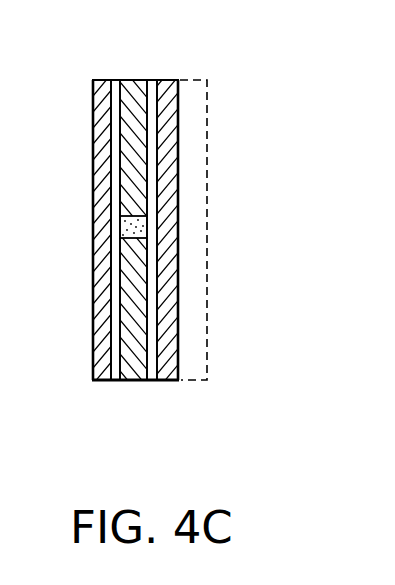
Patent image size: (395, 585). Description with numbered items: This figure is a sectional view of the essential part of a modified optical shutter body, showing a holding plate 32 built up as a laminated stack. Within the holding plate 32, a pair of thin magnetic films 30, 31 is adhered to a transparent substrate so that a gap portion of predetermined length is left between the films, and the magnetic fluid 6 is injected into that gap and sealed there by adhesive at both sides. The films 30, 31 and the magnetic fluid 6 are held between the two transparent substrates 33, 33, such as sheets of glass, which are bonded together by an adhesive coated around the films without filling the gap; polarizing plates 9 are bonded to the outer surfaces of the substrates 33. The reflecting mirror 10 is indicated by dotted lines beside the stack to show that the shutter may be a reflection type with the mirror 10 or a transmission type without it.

The outer plate 9 is at (98, 80).
The holding plate 32 is at (177, 234).
The magnetic films 30 is at (147, 170).
The intermediate layer 31 is at (147, 331).
The magnetic fluid 6 is at (122, 231).
The transparent substrates 33 is at (115, 382).
The reflecting mirror 10 is at (204, 106).